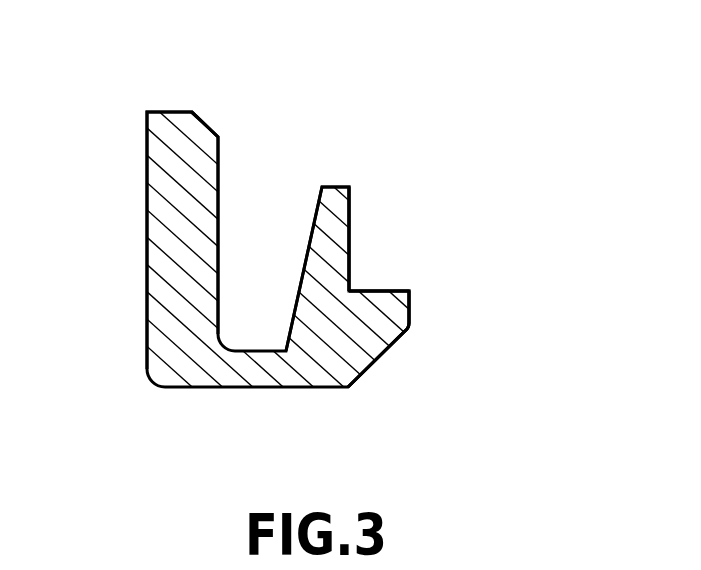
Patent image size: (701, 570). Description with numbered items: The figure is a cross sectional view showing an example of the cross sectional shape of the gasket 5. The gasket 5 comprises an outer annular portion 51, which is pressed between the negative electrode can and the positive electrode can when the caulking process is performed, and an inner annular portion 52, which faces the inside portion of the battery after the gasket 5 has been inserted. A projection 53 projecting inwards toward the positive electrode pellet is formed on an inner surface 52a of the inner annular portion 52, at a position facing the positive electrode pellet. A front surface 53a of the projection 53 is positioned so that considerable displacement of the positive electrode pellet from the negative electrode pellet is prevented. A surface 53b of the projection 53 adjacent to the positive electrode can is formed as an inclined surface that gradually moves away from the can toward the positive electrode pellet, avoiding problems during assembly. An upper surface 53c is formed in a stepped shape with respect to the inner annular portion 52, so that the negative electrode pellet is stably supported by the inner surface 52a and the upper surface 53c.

The gasket 5 is at (303, 128).
The outer annular portion 51 is at (165, 262).
The inner annular portion 52 is at (322, 220).
The inner surface 52a is at (352, 222).
The projection 53 is at (385, 304).
The front surface 53a is at (412, 324).
The inclined surface 53b is at (378, 362).
The upper surface 53c is at (393, 291).